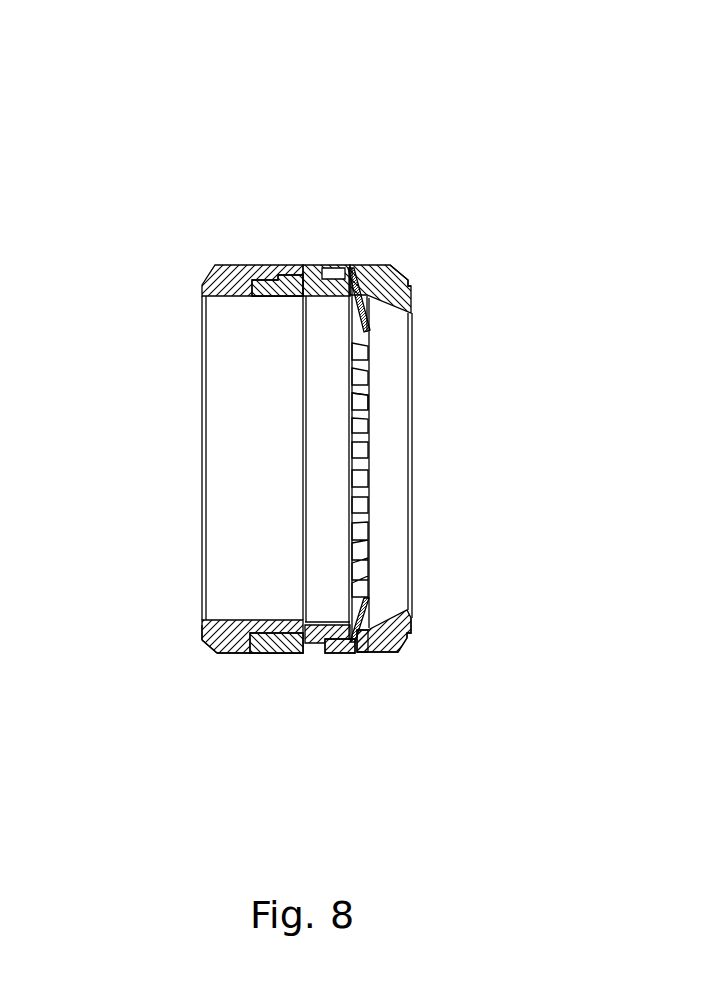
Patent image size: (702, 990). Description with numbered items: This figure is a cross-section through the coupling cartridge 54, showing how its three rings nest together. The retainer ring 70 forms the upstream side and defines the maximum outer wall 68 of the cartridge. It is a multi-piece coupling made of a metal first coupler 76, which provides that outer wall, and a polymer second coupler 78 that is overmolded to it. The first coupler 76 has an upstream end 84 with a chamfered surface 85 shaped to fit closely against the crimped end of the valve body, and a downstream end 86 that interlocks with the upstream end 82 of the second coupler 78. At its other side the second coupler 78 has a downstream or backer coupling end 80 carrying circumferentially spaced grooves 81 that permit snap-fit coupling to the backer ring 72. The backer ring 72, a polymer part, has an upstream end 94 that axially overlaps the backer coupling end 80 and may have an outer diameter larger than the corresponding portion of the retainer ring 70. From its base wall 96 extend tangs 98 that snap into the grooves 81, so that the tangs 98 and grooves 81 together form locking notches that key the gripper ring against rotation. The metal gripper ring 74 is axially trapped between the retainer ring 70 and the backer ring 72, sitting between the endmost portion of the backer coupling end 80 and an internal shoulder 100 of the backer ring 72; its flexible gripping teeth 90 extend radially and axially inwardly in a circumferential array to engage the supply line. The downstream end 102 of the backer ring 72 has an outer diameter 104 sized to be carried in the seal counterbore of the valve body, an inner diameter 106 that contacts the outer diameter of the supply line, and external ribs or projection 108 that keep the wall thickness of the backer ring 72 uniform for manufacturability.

The coupling cartridge 54 is at (384, 130).
The maximum outer wall 68 is at (225, 657).
The retainer ring 70 is at (180, 265).
The backer ring 72 is at (440, 302).
The gripper ring 74 is at (372, 460).
The first coupler 76 is at (187, 643).
The second coupler 78 is at (272, 662).
The backer coupling end 80 is at (343, 282).
The grooves 81 is at (323, 278).
The upstream end 82 is at (262, 278).
The upstream end 84 is at (202, 632).
The chamfered surface 85 is at (205, 645).
The downstream end 86 is at (290, 620).
The gripping teeth 90 is at (372, 410).
The upstream end 94 is at (327, 662).
The base wall 96 is at (370, 637).
The tangs 98 is at (338, 620).
The internal shoulder 100 is at (338, 645).
The downstream end 102 is at (417, 627).
The outer diameter 104 is at (405, 643).
The inner diameter 106 is at (410, 552).
The projection 108 is at (392, 280).